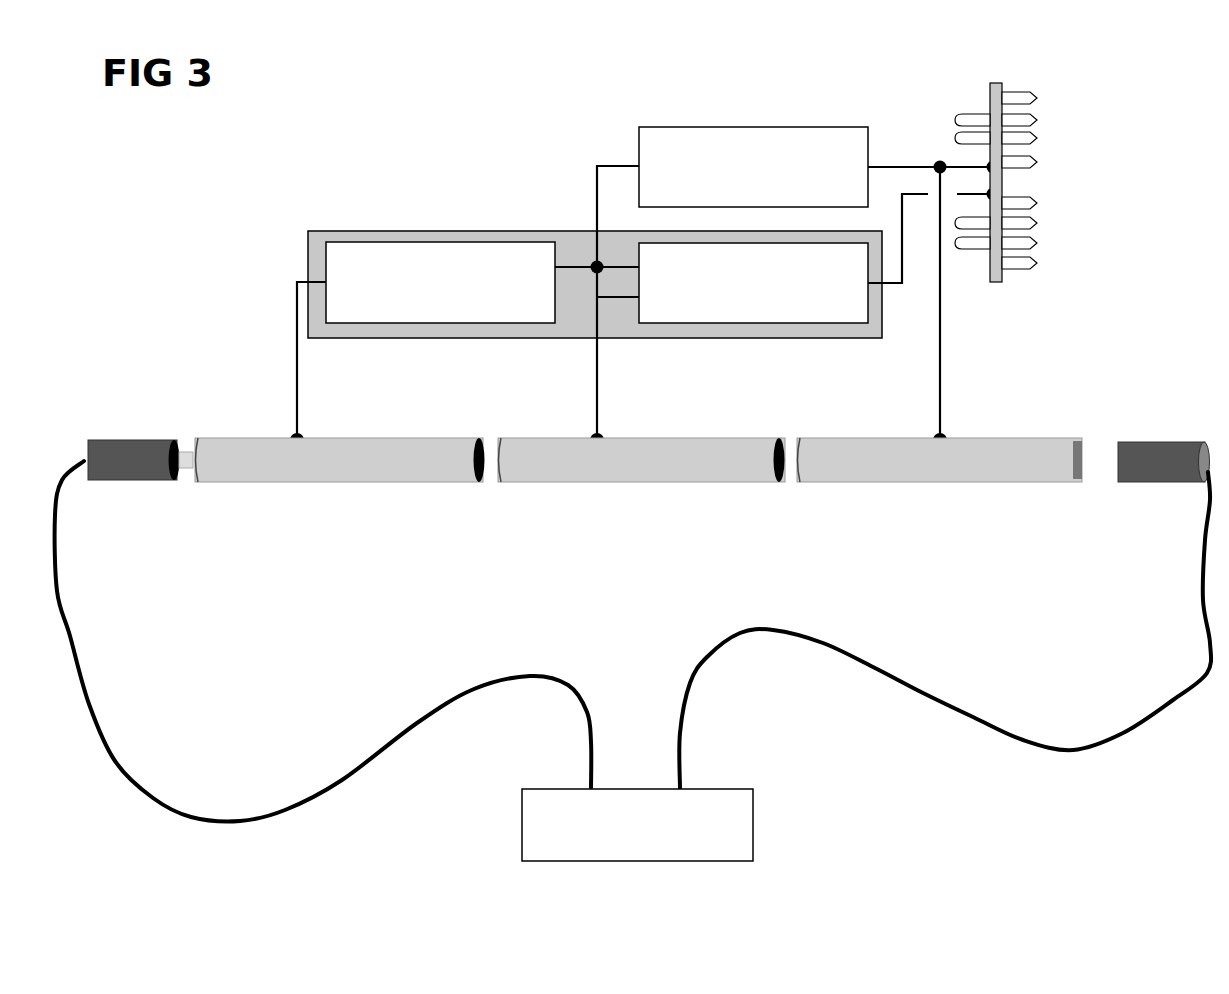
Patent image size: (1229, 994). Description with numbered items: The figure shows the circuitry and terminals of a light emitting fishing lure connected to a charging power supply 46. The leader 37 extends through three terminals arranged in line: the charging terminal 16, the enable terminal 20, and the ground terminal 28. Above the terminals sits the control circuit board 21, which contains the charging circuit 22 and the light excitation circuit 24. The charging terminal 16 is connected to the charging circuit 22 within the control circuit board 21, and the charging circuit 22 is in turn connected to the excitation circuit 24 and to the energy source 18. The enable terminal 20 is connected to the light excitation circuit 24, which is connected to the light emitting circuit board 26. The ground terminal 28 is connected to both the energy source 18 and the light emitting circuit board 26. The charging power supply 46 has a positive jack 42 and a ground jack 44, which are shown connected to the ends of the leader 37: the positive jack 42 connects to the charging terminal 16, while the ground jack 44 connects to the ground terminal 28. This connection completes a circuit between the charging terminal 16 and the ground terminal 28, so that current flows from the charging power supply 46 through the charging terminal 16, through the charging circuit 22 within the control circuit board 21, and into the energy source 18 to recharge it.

The charging terminal 16 is at (429, 482).
The energy source 18 is at (639, 130).
The enable terminal 20 is at (721, 482).
The control circuit board 21 is at (477, 230).
The charging circuit 22 is at (385, 242).
The light excitation circuit 24 is at (743, 323).
The light emitting circuit board 26 is at (997, 83).
The ground terminal 28 is at (928, 480).
The leader 37 is at (187, 452).
The positive jack 42 is at (150, 480).
The ground jack 44 is at (1147, 482).
The charging power supply 46 is at (522, 802).